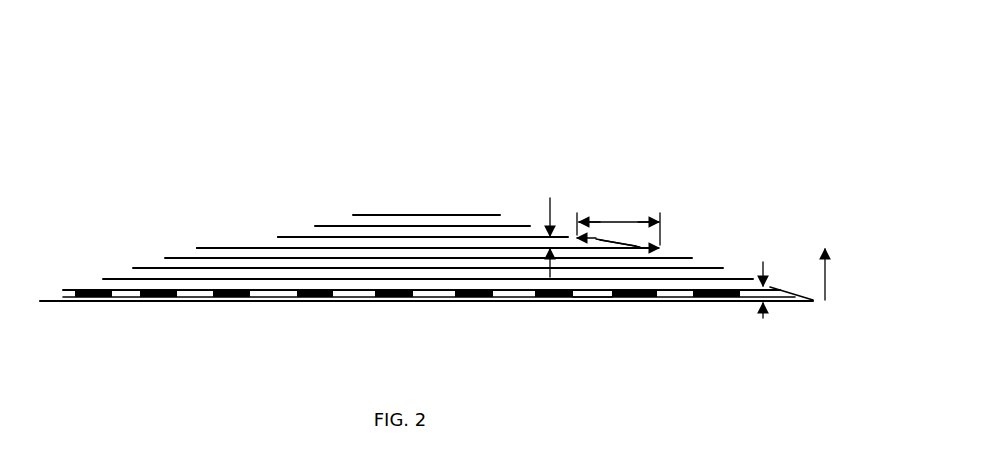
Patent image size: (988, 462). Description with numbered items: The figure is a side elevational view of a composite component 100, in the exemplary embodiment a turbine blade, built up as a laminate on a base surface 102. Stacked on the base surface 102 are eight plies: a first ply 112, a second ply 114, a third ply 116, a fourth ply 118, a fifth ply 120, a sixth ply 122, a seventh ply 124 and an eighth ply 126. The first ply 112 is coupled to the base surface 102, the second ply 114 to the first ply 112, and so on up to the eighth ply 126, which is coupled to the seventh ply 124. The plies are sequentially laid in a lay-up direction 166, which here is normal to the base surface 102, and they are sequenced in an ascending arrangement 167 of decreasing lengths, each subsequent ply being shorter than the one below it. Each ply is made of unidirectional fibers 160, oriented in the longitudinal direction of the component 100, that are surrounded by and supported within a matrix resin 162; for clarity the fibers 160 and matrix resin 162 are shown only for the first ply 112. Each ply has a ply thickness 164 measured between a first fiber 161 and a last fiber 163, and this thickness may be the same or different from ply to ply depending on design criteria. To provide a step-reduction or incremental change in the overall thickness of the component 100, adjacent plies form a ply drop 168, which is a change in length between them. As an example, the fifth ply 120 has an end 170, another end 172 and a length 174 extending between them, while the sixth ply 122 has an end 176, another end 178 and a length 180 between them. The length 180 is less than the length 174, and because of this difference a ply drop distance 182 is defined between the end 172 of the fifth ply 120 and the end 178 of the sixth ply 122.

The composite component 100 is at (699, 95).
The base surface 102 is at (200, 303).
The first ply 112 is at (86, 285).
The second ply 114 is at (113, 277).
The third ply 116 is at (145, 267).
The fourth ply 118 is at (175, 257).
The fifth ply 120 is at (223, 247).
The sixth ply 122 is at (305, 228).
The seventh ply 124 is at (335, 226).
The eighth ply 126 is at (377, 215).
The fibers 160 is at (478, 301).
The first fiber 161 is at (270, 300).
The matrix resin 162 is at (390, 301).
The last fiber 163 is at (575, 289).
The ply thickness 164 is at (770, 315).
The lay-up direction 166 is at (827, 283).
The ascending arrangement 167 is at (397, 135).
The ply drop 168 is at (620, 245).
The end 170 is at (193, 250).
The another end 172 is at (662, 243).
The length 174 is at (245, 248).
The end 176 is at (280, 237).
The another end 178 is at (567, 232).
The length 180 is at (550, 198).
The ply drop distance 182 is at (618, 221).